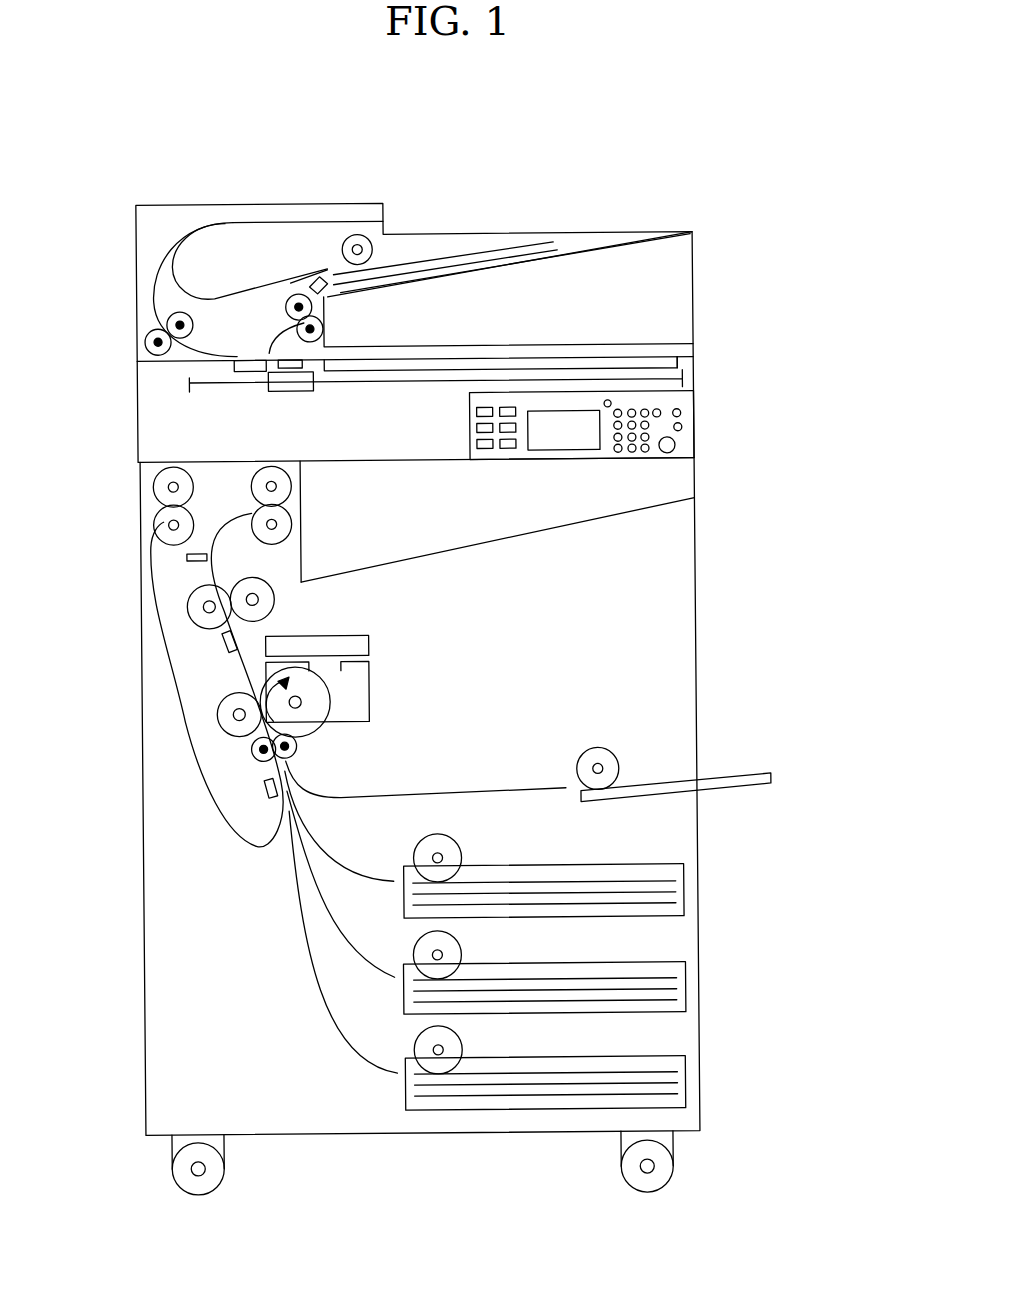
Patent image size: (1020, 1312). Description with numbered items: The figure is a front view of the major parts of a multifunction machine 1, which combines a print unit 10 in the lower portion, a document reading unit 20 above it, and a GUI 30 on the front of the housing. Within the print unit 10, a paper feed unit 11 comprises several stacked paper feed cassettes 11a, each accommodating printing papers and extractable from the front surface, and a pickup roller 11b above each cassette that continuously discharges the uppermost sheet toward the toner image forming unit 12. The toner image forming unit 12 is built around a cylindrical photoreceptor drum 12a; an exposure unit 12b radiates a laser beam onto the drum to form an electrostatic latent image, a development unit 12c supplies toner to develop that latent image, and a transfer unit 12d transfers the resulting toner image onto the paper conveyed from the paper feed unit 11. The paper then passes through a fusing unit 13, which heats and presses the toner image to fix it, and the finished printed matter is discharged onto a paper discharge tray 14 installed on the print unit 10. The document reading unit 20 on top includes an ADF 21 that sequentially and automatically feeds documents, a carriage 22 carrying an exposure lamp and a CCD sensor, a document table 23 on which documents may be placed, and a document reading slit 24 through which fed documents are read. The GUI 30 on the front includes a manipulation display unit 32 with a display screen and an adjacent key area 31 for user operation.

The multifunction machine 1 is at (725, 199).
The print unit 10 is at (700, 632).
The paper feed unit 11 is at (592, 961).
The paper feed cassette 11a is at (538, 863).
The pickup roller 11b is at (452, 836).
The toner image forming unit 12 is at (382, 724).
The photoreceptor drum 12a is at (313, 737).
The exposure unit 12b is at (371, 646).
The development unit 12c is at (371, 690).
The transfer unit 12d is at (229, 742).
The fusing unit 13 is at (291, 598).
The paper discharge tray 14 is at (420, 556).
The document reading unit 20 is at (140, 437).
The ADF (automatic document feeder) 21 is at (341, 202).
The carriage 22 is at (287, 392).
The document table 23 is at (683, 362).
The document reading slit 24 is at (235, 366).
The GUI (graphical user interface) 30 is at (690, 444).
The operation keys 31 is at (610, 449).
The manipulation display unit 32 is at (550, 442).